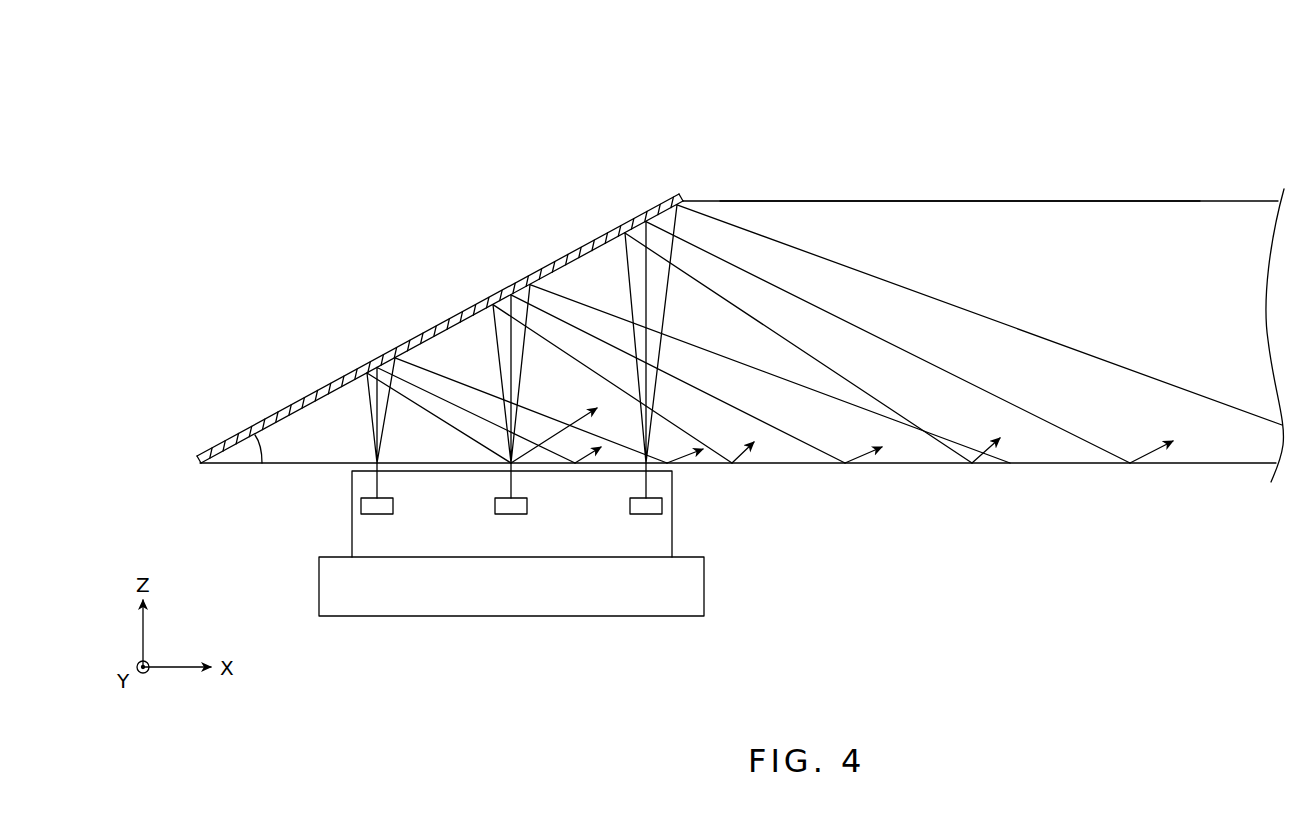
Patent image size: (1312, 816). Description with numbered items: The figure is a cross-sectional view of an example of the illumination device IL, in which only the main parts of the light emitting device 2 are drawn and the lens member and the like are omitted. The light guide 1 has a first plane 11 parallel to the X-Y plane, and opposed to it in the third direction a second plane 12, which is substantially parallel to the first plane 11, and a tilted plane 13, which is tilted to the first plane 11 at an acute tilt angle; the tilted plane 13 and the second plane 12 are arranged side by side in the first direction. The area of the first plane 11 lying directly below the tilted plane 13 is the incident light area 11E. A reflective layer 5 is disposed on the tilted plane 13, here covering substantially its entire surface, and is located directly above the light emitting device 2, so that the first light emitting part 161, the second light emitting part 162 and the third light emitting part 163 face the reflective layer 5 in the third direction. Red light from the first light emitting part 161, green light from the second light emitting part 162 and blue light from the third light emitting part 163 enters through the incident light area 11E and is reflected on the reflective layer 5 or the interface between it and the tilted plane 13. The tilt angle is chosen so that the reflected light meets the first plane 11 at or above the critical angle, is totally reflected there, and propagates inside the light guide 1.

The light guide 1 is at (1211, 201).
The light emitting device 2 is at (704, 616).
The reflective layer 5 is at (422, 352).
The first plane 11 is at (924, 468).
The incident light area 11E is at (427, 473).
The second plane 12 is at (896, 195).
The tilted plane 13 is at (567, 256).
The first light emitting part 161 is at (377, 514).
The second light emitting part 162 is at (511, 514).
The third light emitting part 163 is at (646, 514).
The illumination device IL is at (1068, 576).